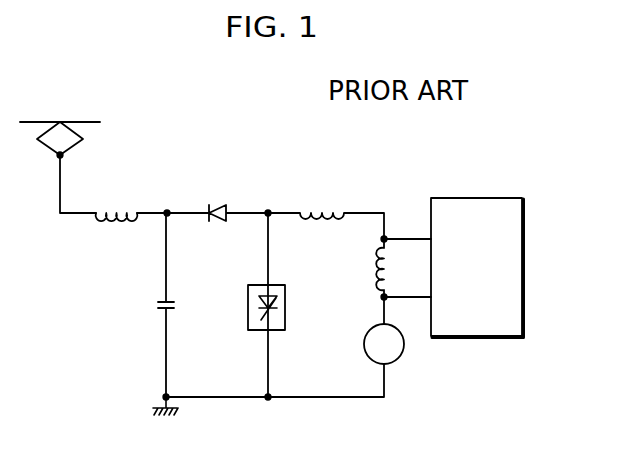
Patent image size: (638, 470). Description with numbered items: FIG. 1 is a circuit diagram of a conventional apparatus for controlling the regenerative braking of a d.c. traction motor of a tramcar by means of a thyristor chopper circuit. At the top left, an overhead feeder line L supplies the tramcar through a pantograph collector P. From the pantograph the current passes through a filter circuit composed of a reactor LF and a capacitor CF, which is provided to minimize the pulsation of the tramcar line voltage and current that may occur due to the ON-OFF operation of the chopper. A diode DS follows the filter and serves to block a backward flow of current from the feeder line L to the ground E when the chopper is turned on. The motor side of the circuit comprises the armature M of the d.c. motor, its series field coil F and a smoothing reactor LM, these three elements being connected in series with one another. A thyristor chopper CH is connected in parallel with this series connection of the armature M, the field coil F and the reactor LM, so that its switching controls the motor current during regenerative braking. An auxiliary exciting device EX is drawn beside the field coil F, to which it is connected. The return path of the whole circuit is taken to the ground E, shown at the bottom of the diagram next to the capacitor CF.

The overhead feeder line L is at (84, 120).
The pantograph collector P is at (86, 142).
The reactor LF is at (117, 226).
The diode DS is at (212, 206).
The smoothing reactor LM is at (321, 207).
The series field coil F is at (375, 268).
The auxiliary exciting device EX is at (525, 269).
The armature M is at (336, 347).
The capacitor CF is at (176, 305).
The thyristor chopper CH is at (286, 311).
The ground E is at (180, 413).